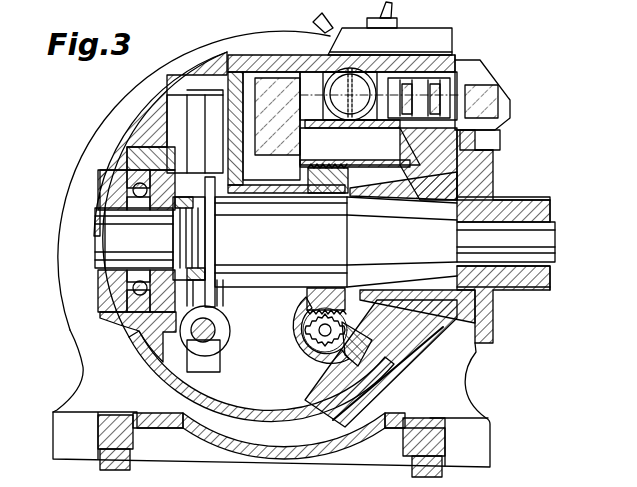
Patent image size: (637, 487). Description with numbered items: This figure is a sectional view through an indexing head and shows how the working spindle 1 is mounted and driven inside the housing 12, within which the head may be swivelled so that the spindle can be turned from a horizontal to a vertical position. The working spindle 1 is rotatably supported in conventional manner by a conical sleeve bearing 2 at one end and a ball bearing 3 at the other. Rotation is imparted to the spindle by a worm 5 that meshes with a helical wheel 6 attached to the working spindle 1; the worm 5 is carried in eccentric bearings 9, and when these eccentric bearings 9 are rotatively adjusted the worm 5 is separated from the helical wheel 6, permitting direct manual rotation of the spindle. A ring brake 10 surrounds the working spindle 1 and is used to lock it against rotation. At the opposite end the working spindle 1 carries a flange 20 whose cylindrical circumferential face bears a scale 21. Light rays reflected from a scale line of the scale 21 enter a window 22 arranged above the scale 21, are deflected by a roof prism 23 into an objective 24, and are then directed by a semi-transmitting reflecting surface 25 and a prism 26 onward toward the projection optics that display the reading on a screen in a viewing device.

The working spindle 1 is at (517, 280).
The conical sleeve bearing 2 is at (467, 298).
The ball bearing 3 is at (120, 298).
The worm 5 is at (300, 325).
The helical wheel 6 is at (313, 287).
The eccentric bearings 9 is at (312, 370).
The ring brake 10 is at (207, 282).
The housing 12 is at (62, 270).
The flange 20 is at (487, 180).
The scale 21 is at (483, 150).
The window 22 is at (500, 133).
The roof prism 23 is at (472, 83).
The objective 24 is at (445, 77).
The semi-transmitting reflecting surface 25 is at (345, 128).
The prism 26 is at (271, 127).